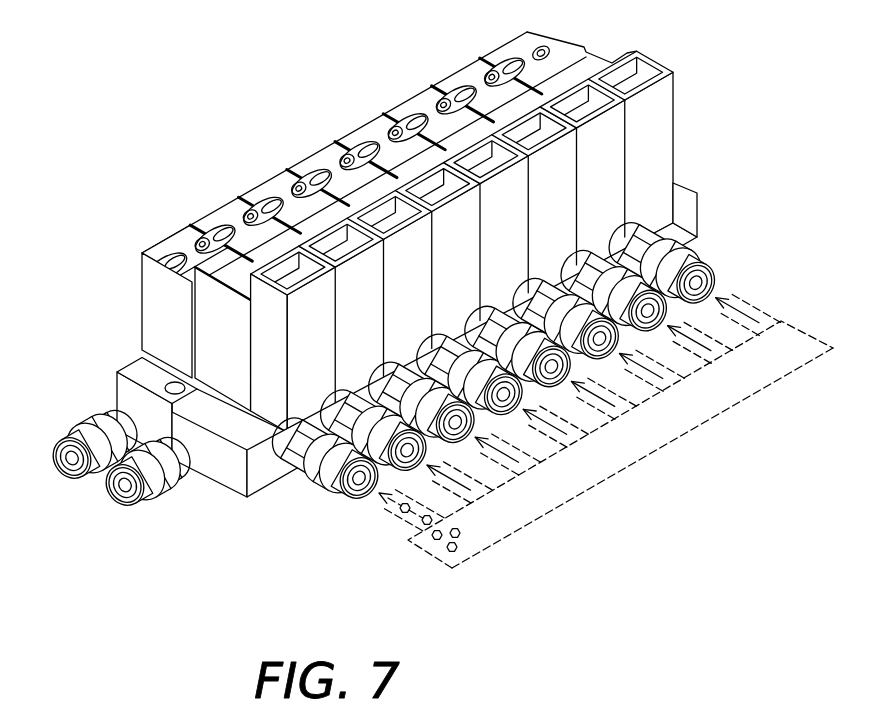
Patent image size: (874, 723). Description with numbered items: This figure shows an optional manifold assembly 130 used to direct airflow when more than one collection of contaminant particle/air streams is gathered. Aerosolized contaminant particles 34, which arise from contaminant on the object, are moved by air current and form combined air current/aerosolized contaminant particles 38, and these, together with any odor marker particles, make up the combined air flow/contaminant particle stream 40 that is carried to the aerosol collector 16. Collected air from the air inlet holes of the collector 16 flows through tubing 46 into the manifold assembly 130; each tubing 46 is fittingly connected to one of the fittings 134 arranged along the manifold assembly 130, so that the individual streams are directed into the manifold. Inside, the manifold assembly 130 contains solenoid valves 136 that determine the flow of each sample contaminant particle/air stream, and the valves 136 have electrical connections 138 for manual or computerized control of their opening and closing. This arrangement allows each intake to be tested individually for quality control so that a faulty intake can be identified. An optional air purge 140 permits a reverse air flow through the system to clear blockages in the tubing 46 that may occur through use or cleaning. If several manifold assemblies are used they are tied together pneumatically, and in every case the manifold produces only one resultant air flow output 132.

The manifold assembly 130 is at (423, 255).
The air flow output 132 is at (18, 494).
The fittings 134 is at (697, 265).
The solenoid valves 136 is at (590, 53).
The electrical connections 138 is at (640, 84).
The air purge 140 is at (66, 531).
The combined air flow/contaminant particle stream 40 is at (732, 300).
The tubing 46 is at (770, 318).
The aerosol collector 16 is at (588, 504).
The combined air current/aerosolized contaminant particles 38 is at (380, 515).
The aerosolized contaminant particles 34 is at (452, 549).